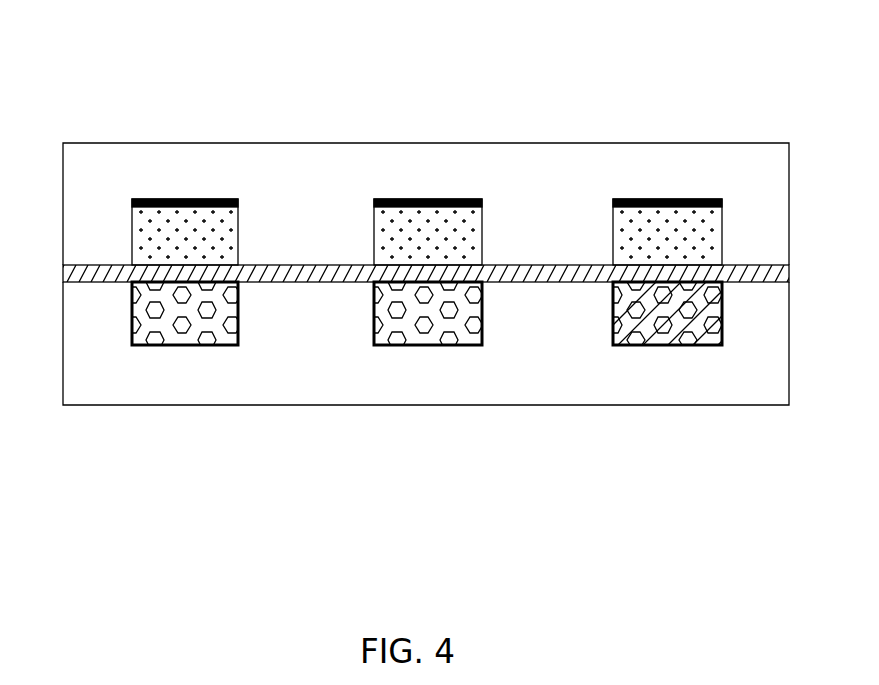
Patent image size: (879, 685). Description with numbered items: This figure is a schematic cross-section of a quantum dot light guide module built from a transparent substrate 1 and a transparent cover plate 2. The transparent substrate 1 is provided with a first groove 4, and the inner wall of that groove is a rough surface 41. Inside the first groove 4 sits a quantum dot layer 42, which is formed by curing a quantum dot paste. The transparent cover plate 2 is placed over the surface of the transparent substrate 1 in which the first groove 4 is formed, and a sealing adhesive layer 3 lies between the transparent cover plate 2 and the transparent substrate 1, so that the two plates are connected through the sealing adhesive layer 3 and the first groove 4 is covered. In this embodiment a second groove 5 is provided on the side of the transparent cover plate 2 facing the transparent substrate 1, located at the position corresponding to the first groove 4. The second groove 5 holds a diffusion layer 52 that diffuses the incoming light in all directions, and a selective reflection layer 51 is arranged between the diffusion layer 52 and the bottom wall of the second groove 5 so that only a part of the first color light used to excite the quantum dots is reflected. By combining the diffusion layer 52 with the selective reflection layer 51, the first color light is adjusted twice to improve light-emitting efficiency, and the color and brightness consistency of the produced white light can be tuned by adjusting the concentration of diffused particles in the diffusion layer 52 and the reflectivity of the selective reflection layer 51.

The transparent substrate 1 is at (97, 395).
The transparent cover plate 2 is at (668, 162).
The sealing adhesive layer 3 is at (325, 275).
The first groove 4 is at (208, 391).
The rough surface 41 is at (204, 338).
The quantum dot layer 42 is at (212, 340).
The second groove 5 is at (252, 146).
The selective reflection layer 51 is at (207, 200).
The diffusion layer 52 is at (208, 243).